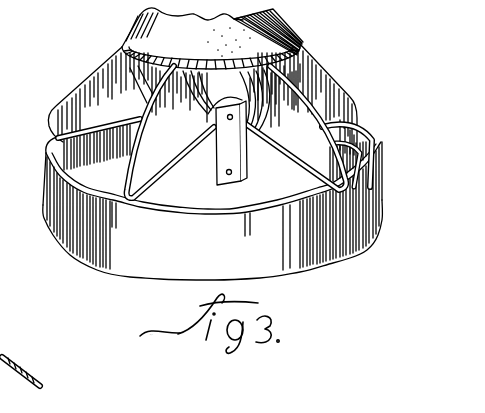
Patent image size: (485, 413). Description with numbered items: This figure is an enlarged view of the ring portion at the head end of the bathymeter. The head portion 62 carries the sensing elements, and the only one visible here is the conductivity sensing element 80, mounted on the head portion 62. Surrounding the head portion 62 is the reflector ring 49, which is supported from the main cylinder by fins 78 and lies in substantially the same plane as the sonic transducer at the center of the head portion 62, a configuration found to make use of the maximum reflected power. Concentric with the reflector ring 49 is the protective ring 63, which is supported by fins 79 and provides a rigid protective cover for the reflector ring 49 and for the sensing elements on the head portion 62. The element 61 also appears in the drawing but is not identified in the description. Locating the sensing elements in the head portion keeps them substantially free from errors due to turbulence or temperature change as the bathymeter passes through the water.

The reflector ring 49 is at (50, 148).
The drill 61 is at (12, 358).
The head portion 62 is at (298, 32).
The protective ring 63 is at (47, 219).
The fins 78 is at (83, 124).
The fins 79 is at (97, 78).
The conductivity sensing element 80 is at (235, 174).